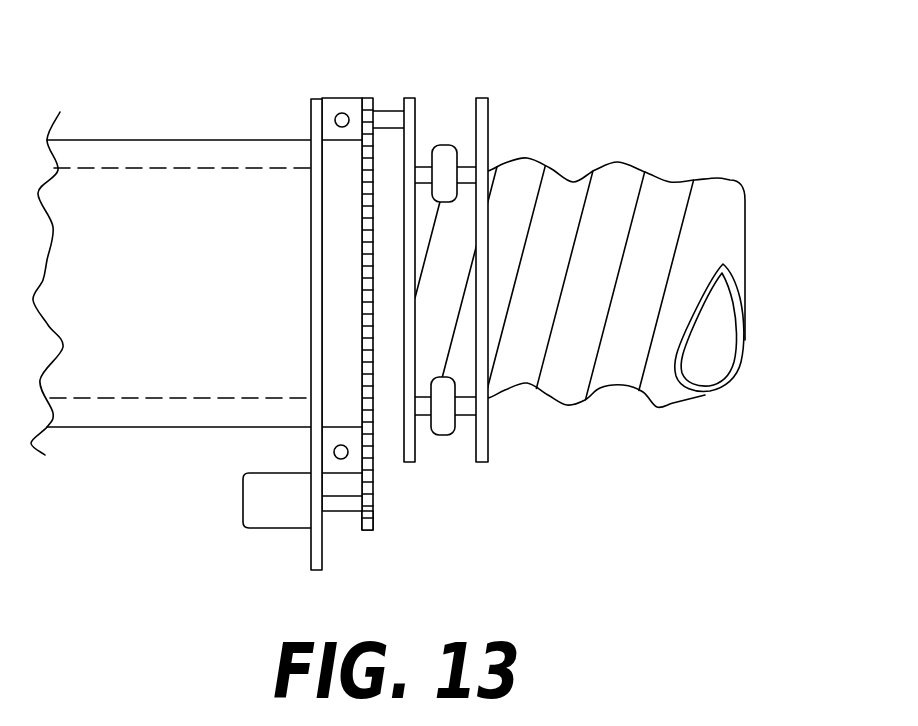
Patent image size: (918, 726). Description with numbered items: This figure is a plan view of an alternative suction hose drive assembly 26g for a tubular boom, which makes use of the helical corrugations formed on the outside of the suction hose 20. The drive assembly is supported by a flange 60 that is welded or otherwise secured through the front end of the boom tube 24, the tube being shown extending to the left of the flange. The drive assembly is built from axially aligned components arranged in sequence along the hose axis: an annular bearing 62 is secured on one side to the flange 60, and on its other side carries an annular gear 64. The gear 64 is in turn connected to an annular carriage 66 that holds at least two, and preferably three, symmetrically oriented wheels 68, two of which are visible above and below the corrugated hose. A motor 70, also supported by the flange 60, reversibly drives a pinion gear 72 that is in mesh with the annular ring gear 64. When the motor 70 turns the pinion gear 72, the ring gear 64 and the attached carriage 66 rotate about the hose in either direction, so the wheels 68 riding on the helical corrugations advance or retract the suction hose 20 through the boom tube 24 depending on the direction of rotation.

The suction hose 20 is at (655, 396).
The boom tube 24 is at (224, 151).
The drive assembly 26g is at (377, 292).
The flange 60 is at (313, 100).
The annular bearing 62 is at (333, 99).
The annular gear 64 is at (380, 98).
The annular carriage 66 is at (488, 446).
The wheels 68 is at (450, 152).
The motor 70 is at (241, 499).
The pinion gear 72 is at (373, 518).